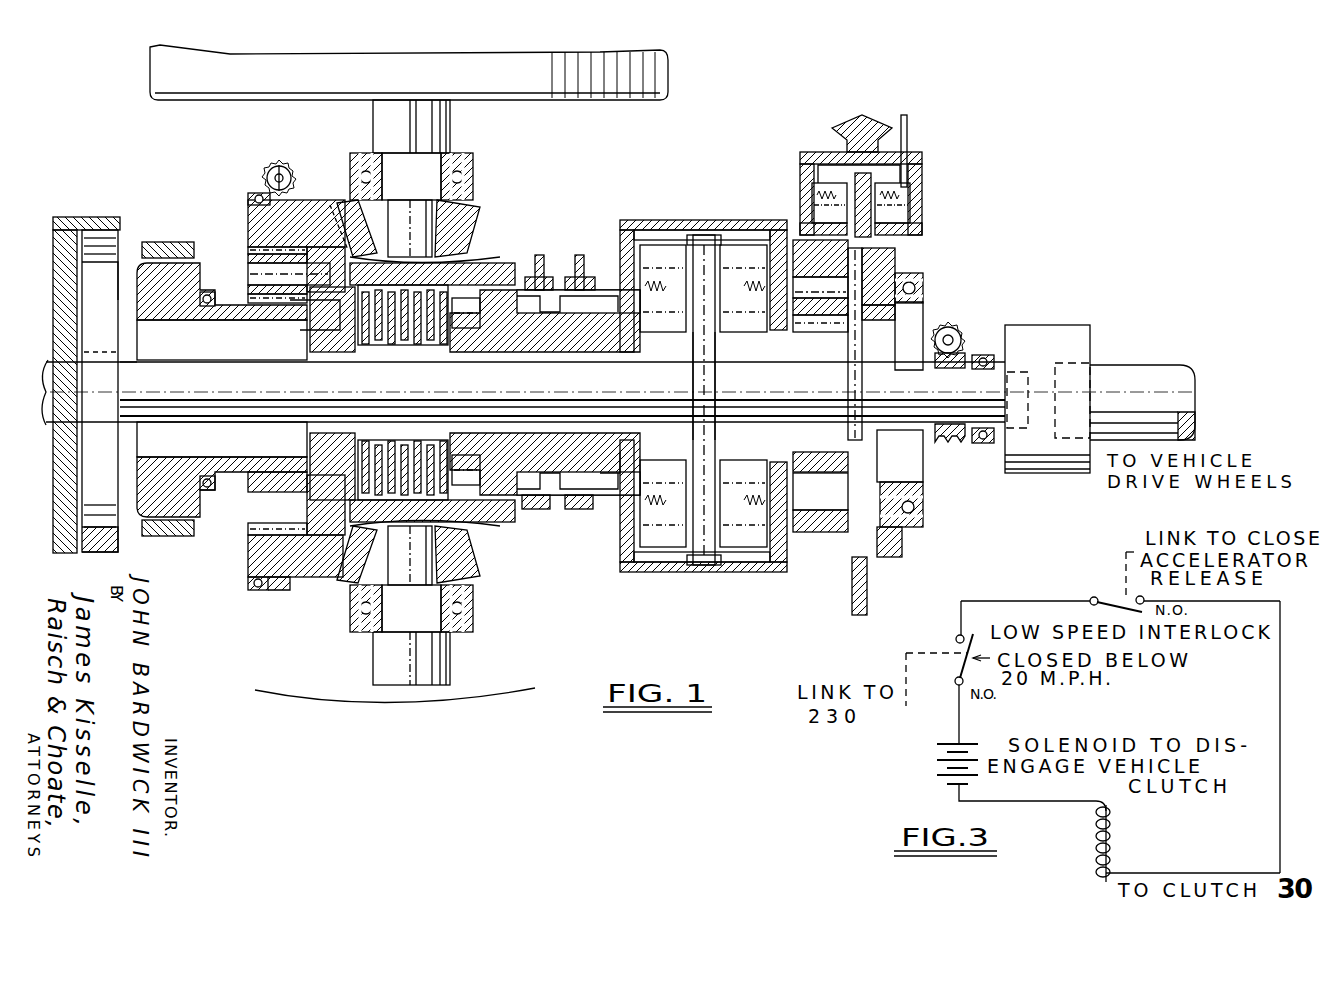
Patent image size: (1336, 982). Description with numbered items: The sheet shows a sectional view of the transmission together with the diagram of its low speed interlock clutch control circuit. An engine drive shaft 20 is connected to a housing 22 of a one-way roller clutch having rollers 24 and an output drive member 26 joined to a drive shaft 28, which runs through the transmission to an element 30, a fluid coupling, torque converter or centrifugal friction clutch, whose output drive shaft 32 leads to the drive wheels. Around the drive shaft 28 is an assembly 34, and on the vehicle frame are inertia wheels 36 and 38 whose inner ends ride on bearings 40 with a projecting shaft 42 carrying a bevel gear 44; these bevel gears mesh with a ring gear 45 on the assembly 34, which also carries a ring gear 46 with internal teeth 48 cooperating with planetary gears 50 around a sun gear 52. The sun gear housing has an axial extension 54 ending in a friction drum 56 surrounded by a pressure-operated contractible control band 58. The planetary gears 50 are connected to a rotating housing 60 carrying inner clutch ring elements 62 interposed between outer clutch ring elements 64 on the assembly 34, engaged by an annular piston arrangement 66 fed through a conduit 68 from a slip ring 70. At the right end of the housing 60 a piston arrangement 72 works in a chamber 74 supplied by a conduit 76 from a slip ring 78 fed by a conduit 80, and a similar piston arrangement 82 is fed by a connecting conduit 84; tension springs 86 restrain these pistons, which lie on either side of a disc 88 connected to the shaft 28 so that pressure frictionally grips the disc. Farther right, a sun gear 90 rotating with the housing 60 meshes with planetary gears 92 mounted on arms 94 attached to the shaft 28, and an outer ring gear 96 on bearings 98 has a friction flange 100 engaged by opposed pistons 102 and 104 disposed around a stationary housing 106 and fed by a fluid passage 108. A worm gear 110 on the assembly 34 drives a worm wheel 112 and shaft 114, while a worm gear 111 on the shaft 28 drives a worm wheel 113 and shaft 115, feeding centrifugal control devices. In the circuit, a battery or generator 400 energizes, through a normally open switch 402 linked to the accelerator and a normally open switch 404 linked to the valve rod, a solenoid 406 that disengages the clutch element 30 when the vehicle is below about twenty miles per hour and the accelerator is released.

In FIG. 1, the engine drive shaft 20 is at (62, 385).
In FIG. 1, the housing 22 is at (68, 222).
In FIG. 1, the rollers 24 is at (110, 235).
In FIG. 1, the output drive member 26 is at (112, 260).
In FIG. 1, the drive shaft 28 is at (176, 378).
In FIG. 1, the element 30 is at (1062, 345).
In FIG. 1, the drive shaft 32 is at (1138, 372).
In FIG. 1, the assembly 34 is at (312, 200).
In FIG. 1, the inertia wheel 36 is at (668, 82).
In FIG. 1, the inertia wheel 38 is at (498, 703).
In FIG. 1, the bearings 40 is at (445, 160).
In FIG. 1, the projecting shaft 42 is at (400, 225).
In FIG. 1, the bevel gear 44 is at (468, 230).
In FIG. 1, the ring gear 45 is at (352, 205).
In FIG. 1, the ring gear 46 is at (248, 212).
In FIG. 1, the internal teeth 48 is at (278, 530).
In FIG. 1, the planetary gears 50 is at (250, 265).
In FIG. 1, the sun gear 52 is at (268, 482).
In FIG. 1, the axial extension 54 is at (222, 310).
In FIG. 1, the friction drum 56 is at (176, 470).
In FIG. 1, the contractible control band 58 is at (190, 545).
In FIG. 1, the rotating housing 60 is at (557, 305).
In FIG. 1, the inner clutch ring elements 62 is at (428, 340).
In FIG. 1, the outer clutch ring elements 64 is at (390, 340).
In FIG. 1, the annular piston arrangement 66 is at (466, 320).
In FIG. 1, the conduit 68 is at (534, 262).
In FIG. 1, the slip ring 70 is at (535, 509).
In FIG. 1, the piston arrangement 72 is at (657, 255).
In FIG. 1, the chamber 74 is at (635, 232).
In FIG. 1, the conduit 76 is at (612, 478).
In FIG. 1, the slip ring 78 is at (577, 510).
In FIG. 1, the conduit 80 is at (585, 265).
In FIG. 1, the piston arrangement 82 is at (735, 255).
In FIG. 1, the connecting conduit 84 is at (700, 240).
In FIG. 1, the tension springs 86 is at (790, 505).
In FIG. 1, the disc 88 is at (706, 400).
In FIG. 1, the sun gear 90 is at (803, 318).
In FIG. 1, the planetary gears 92 is at (822, 330).
In FIG. 1, the arms 94 is at (866, 365).
In FIG. 1, the outer ring gear 96 is at (896, 260).
In FIG. 1, the bearings 98 is at (928, 283).
In FIG. 1, the friction flange 100 is at (867, 150).
In FIG. 1, the piston 102 is at (812, 195).
In FIG. 1, the piston 104 is at (915, 193).
In FIG. 1, the stationary housing 106 is at (918, 168).
In FIG. 1, the fluid passage 108 is at (908, 135).
In FIG. 1, the worm gear 110 is at (262, 595).
In FIG. 1, the worm gear 111 is at (948, 442).
In FIG. 1, the worm wheel 112 is at (265, 175).
In FIG. 1, the worm wheel 113 is at (960, 328).
In FIG. 1, the shaft 114 is at (281, 170).
In FIG. 1, the shaft 115 is at (957, 340).
In FIG. 3, the battery or generator 400 is at (942, 761).
In FIG. 3, the switch 402 is at (1117, 597).
In FIG. 3, the switch 404 is at (966, 651).
In FIG. 3, the solenoid 406 is at (1113, 842).